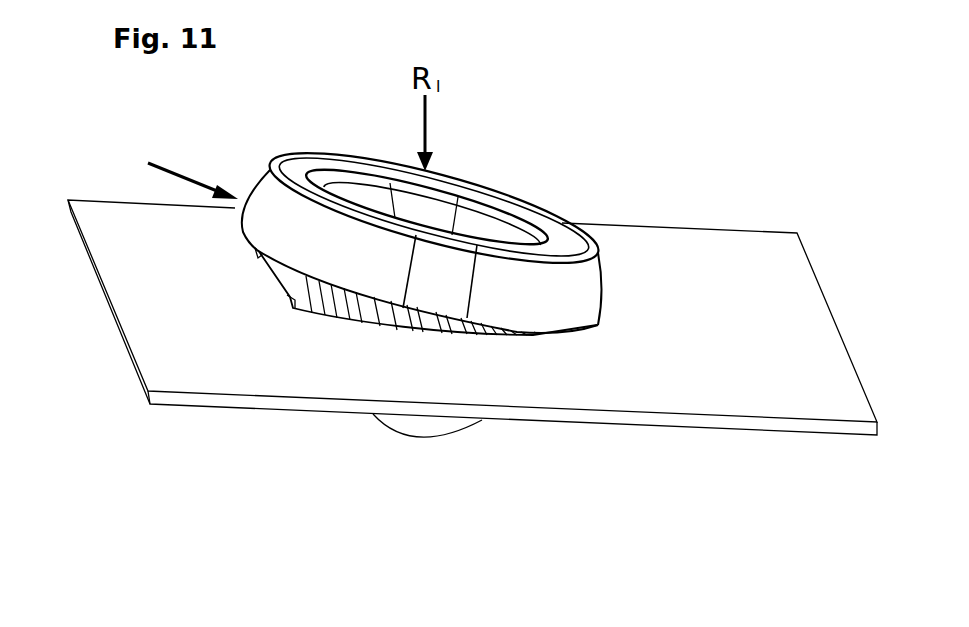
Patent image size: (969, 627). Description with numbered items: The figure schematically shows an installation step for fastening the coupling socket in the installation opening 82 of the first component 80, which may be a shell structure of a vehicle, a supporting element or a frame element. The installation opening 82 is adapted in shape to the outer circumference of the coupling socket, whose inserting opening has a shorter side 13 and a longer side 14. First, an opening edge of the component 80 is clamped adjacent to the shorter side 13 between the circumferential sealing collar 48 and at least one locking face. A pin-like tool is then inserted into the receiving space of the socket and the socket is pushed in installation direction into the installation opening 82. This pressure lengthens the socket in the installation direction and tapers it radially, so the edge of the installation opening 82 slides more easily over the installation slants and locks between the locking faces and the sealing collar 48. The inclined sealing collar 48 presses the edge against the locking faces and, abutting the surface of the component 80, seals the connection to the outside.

The shorter side 13 is at (572, 247).
The longer side 14 is at (474, 232).
The sealing collar 48 is at (562, 316).
The first component 80 is at (187, 333).
The installation opening 82 is at (298, 320).